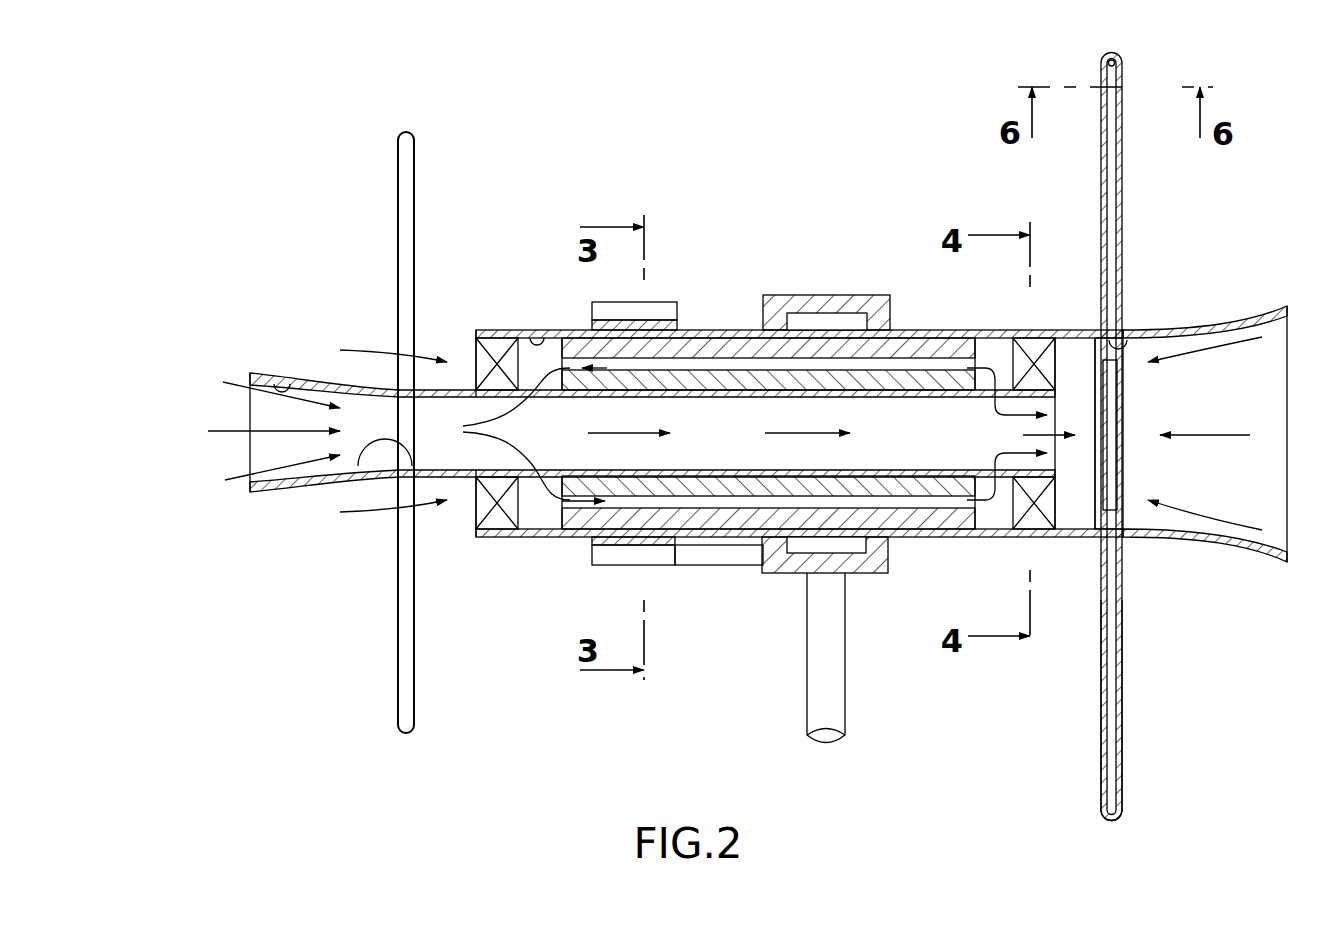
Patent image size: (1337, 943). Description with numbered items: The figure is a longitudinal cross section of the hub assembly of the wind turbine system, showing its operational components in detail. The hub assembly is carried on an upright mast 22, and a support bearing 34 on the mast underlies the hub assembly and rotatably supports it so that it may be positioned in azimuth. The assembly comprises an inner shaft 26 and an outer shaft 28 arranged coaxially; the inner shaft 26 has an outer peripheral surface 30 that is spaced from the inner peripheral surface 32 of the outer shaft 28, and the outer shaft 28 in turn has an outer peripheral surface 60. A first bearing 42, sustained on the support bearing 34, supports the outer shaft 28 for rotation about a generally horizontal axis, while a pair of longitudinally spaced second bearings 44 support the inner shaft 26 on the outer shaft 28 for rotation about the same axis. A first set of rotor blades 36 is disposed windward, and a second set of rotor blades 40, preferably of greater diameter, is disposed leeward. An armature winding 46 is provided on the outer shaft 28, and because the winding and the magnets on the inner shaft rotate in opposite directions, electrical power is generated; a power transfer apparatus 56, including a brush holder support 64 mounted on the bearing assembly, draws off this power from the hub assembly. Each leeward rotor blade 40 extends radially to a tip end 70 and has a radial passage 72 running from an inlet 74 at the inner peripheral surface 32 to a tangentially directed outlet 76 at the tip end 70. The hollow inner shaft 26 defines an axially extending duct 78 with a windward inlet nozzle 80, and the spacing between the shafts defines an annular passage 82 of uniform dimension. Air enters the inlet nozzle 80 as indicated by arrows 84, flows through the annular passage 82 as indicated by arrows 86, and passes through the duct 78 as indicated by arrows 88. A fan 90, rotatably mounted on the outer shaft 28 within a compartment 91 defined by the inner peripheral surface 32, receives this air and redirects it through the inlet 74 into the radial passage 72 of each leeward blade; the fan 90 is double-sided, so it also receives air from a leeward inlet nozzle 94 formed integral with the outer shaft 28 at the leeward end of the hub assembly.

The upright mast 22 is at (832, 693).
The inner shaft 26 is at (460, 385).
The outer shaft 28 is at (715, 328).
The outer peripheral surface 30 is at (465, 478).
The inner peripheral surface 32 is at (540, 338).
The support bearing 34 is at (867, 577).
The first set of rotor blades 36 is at (398, 676).
The second set of rotor blades 40 is at (1120, 700).
The first bearing 42 is at (813, 318).
The second bearings 44 is at (500, 520).
The armature winding 46 is at (948, 350).
The power transfer apparatus 56 is at (662, 297).
The outer peripheral surface 60 is at (553, 542).
The brush holder support 64 is at (603, 555).
The tip end 70 is at (1110, 822).
The radial passage 72 is at (1112, 193).
The inlet 74 is at (1128, 345).
The tangentially directed outlet 76 is at (1108, 55).
The axially extending duct 78 is at (362, 465).
The windward inlet nozzle 80 is at (286, 383).
The annular passage 82 is at (940, 537).
The arrows 84 is at (225, 431).
The arrows 86 is at (500, 434).
The arrows 88 is at (643, 430).
The fan 90 is at (1110, 388).
The compartment 91 is at (1075, 373).
The leeward inlet nozzle 94 is at (1275, 550).